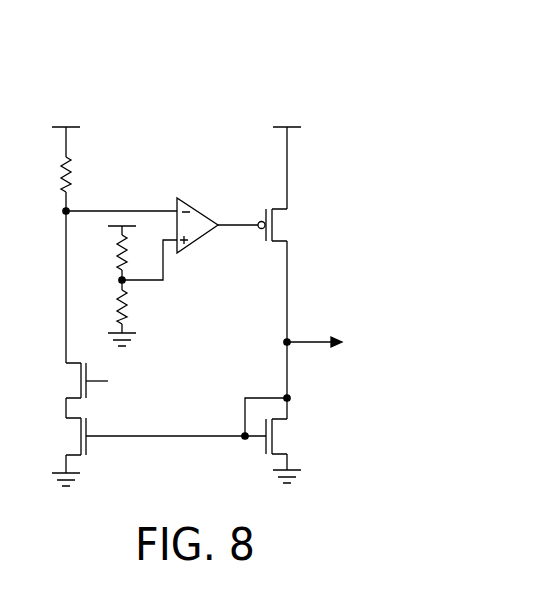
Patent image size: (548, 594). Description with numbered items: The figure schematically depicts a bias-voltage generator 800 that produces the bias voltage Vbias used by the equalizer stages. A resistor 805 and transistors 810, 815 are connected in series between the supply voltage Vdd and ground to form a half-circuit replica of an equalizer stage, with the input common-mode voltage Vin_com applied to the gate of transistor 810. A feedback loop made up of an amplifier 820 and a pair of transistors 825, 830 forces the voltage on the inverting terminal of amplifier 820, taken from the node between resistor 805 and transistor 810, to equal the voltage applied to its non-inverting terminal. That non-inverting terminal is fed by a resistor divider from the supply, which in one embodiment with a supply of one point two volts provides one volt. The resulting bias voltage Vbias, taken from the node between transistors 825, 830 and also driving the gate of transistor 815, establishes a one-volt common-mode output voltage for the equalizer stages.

The bias-voltage generator 800 is at (273, 56).
The resistor 805 is at (71, 166).
The transistor 810 is at (76, 393).
The transistor 815 is at (76, 448).
The amplifier 820 is at (190, 199).
The transistor 825 is at (282, 237).
The transistor 830 is at (282, 449).